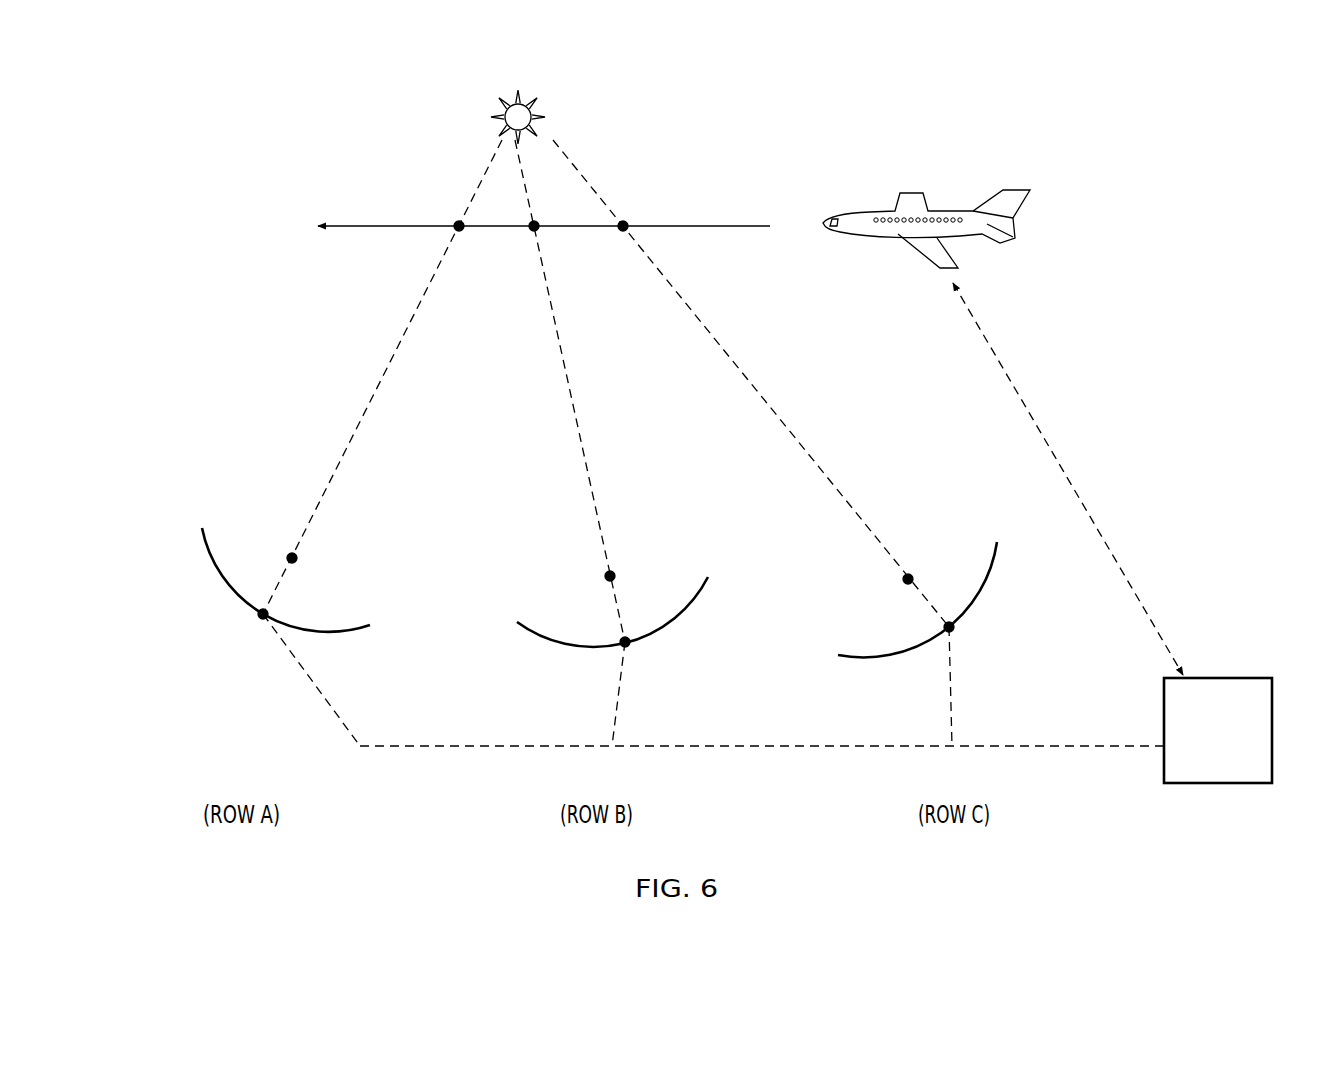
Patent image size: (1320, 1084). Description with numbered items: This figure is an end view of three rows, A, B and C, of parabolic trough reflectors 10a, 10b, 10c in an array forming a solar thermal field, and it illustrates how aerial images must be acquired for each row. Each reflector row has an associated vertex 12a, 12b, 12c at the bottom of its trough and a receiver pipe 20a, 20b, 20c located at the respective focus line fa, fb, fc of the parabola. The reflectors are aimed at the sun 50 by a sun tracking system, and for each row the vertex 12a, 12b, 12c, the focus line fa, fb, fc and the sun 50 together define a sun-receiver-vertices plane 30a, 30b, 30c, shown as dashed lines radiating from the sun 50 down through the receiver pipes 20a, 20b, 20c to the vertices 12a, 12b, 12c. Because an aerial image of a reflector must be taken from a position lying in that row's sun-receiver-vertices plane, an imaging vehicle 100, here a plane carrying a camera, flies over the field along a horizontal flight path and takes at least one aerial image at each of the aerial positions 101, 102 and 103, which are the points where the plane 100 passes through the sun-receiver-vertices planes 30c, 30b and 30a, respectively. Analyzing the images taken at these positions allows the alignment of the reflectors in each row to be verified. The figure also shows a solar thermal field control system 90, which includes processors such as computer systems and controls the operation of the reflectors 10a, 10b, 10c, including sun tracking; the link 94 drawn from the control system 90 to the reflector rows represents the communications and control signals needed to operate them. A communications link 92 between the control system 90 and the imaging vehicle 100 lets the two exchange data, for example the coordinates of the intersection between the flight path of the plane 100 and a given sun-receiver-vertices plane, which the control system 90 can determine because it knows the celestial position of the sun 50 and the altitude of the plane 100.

The sun 50 is at (545, 106).
The imaging vehicle 100 is at (918, 190).
The aerial position 101 is at (622, 231).
The aerial position 102 is at (533, 231).
The aerial position 103 is at (454, 230).
The sun-receiver-vertices plane 30a is at (355, 416).
The sun-receiver-vertices plane 30b is at (583, 446).
The sun-receiver-vertices plane 30c is at (803, 444).
The parabolic trough reflector 10a is at (222, 582).
The parabolic trough reflector 10b is at (565, 647).
The parabolic trough reflector 10c is at (868, 658).
The vertex 12a is at (258, 626).
The vertex 12b is at (642, 649).
The vertex 12c is at (961, 637).
The receiver pipe 20a is at (300, 557).
The receiver pipe 20b is at (615, 566).
The receiver pipe 20c is at (912, 570).
The focus line fa is at (284, 546).
The focus line fb is at (599, 577).
The focus line fc is at (897, 579).
The solar thermal field control system 90 is at (1228, 742).
The communications link 92 is at (1048, 427).
The link 94 is at (1075, 748).